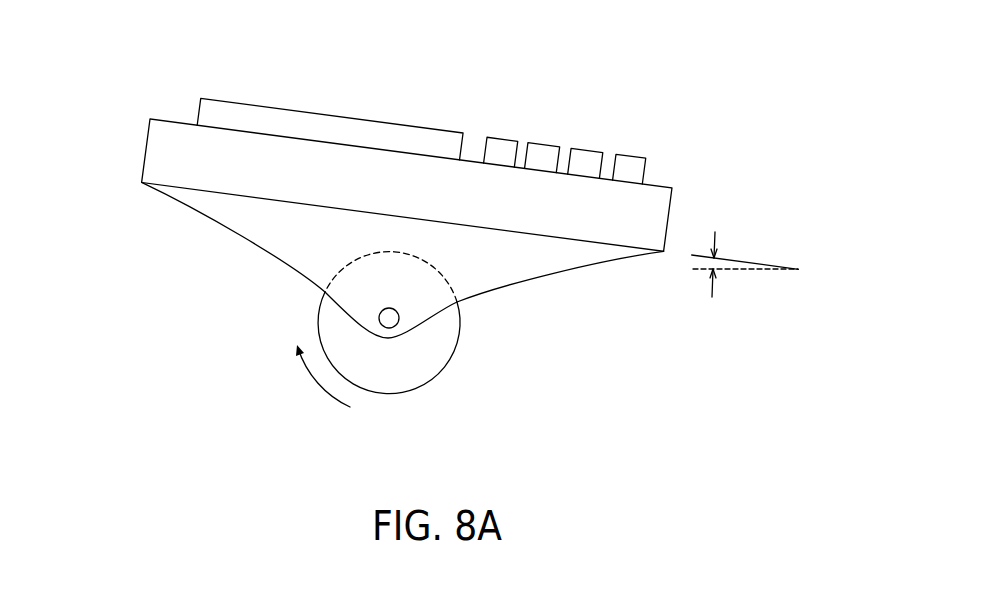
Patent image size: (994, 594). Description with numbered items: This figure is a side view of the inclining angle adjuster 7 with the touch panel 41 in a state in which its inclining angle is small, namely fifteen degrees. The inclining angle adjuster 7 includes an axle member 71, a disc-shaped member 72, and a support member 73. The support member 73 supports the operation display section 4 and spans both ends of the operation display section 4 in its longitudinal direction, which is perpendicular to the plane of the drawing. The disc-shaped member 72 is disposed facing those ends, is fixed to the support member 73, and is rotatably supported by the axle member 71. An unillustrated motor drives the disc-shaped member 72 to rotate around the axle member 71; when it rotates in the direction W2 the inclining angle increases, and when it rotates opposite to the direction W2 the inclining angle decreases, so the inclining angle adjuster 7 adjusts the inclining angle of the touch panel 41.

The operation display section 4 is at (645, 120).
The touch panel 41 is at (272, 118).
The inclining angle adjuster 7 is at (226, 362).
The axle member 71 is at (396, 311).
The disc-shaped member 72 is at (420, 385).
The support member 73 is at (567, 267).
The direction W2 is at (323, 392).